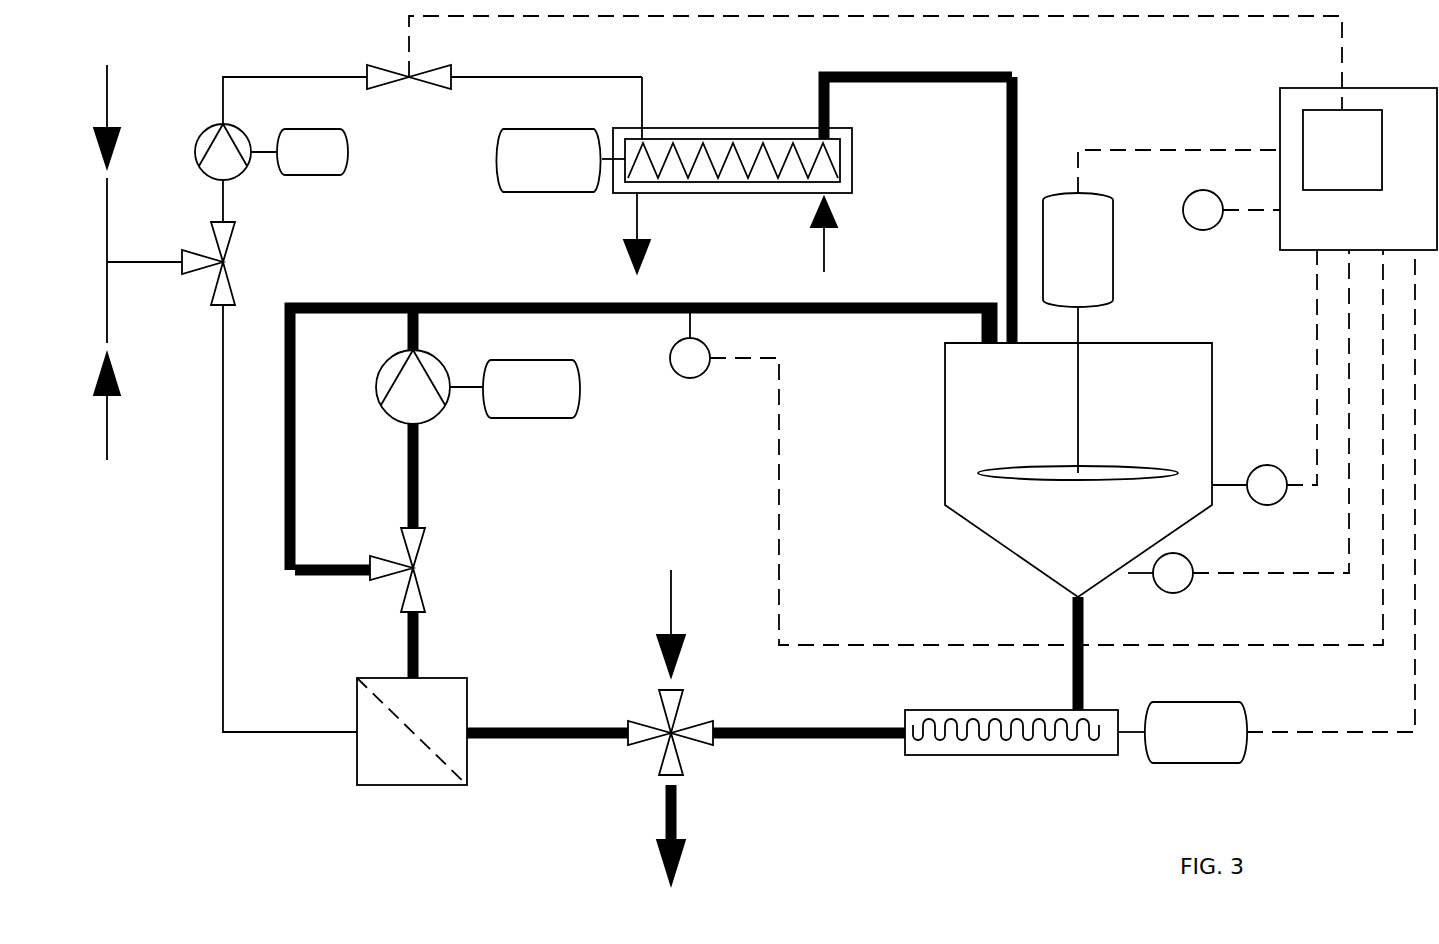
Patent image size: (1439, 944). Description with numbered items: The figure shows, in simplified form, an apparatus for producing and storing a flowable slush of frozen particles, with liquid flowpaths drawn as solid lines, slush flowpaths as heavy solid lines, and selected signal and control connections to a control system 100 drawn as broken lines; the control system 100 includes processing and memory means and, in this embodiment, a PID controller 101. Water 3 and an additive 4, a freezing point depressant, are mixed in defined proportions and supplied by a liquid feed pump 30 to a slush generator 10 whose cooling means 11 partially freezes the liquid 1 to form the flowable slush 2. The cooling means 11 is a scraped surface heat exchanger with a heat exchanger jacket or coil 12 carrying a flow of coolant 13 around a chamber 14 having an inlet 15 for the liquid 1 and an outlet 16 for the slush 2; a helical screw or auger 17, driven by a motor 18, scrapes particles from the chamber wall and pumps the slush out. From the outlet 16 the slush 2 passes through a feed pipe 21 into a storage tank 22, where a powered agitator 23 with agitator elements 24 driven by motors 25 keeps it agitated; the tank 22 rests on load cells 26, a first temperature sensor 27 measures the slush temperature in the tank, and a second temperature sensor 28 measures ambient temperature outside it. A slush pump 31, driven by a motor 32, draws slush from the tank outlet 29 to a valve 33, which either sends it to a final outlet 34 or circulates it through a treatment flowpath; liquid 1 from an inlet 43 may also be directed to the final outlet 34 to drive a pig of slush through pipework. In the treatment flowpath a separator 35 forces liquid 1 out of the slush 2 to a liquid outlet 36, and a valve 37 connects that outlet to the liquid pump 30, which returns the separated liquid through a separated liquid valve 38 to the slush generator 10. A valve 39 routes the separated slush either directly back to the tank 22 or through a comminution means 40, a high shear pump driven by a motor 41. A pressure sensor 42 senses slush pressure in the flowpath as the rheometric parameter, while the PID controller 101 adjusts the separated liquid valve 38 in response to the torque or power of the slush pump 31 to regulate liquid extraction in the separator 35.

The liquid 1 is at (648, 113).
The flowable slush 2 is at (832, 118).
The water 3 is at (117, 97).
The additive 4 is at (115, 431).
The slush generator 10 is at (594, 220).
The cooling means 11 is at (757, 105).
The heat exchanger jacket or coil 12 is at (853, 180).
The coolant 13 is at (645, 232).
The chamber 14 is at (768, 188).
The inlet 15 is at (638, 116).
The outlet 16 is at (820, 116).
The helical screw or auger 17 is at (688, 142).
The motor 18 is at (512, 192).
The feed pipe 21 is at (1004, 184).
The storage tank 22 is at (943, 470).
The powered agitator 23 is at (1146, 294).
The agitator elements 24 is at (1140, 466).
The motors 25 is at (1113, 210).
The load cells 26 is at (1195, 556).
The first temperature sensor 27 is at (1266, 462).
The second temperature sensor 28 is at (1205, 232).
The outlet 29 is at (1088, 620).
The liquid feed pump 30 is at (245, 182).
The slush pump 31 is at (1076, 785).
The motor 32 is at (1169, 765).
The valve 33 is at (708, 698).
The final outlet 34 is at (680, 790).
The separator 35 is at (415, 788).
The liquid outlet 36 is at (315, 730).
The valve 37 is at (232, 268).
The separated liquid valve 38 is at (407, 82).
The valve 39 is at (422, 572).
The comminution means 40 is at (440, 420).
The motor 41 is at (515, 420).
The pressure sensor 42 is at (690, 380).
The inlet 43 is at (665, 592).
The control system 100 is at (1394, 85).
The PID controller 101 is at (1342, 150).